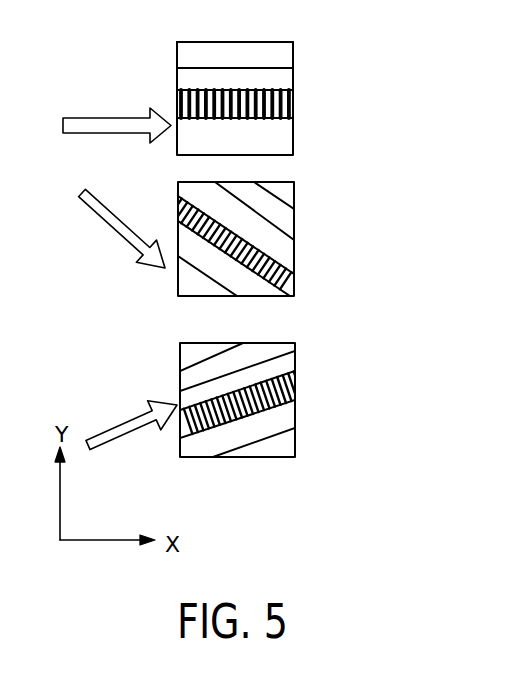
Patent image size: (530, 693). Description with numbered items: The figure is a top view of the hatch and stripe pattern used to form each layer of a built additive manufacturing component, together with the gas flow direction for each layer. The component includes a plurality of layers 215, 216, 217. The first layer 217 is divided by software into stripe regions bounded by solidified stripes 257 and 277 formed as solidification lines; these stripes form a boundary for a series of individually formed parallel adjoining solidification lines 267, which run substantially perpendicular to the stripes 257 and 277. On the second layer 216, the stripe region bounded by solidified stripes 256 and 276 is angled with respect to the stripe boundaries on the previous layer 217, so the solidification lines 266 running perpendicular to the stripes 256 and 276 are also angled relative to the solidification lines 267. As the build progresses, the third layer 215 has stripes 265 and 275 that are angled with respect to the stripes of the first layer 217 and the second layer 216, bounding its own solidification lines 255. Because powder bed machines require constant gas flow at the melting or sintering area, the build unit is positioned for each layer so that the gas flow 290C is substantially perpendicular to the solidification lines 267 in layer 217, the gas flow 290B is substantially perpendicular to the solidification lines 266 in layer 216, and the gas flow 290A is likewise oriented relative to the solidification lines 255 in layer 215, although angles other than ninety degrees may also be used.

The third layer 215 is at (325, 70).
The second layer 216 is at (330, 210).
The first layer 217 is at (330, 368).
The solidification lines 255 is at (180, 107).
The solidified stripe 256 is at (291, 284).
The solidified stripe 257 is at (208, 431).
The stripe 265 is at (190, 68).
The solidification lines 266 is at (185, 219).
The solidification lines 267 is at (180, 434).
The stripe 275 is at (293, 42).
The solidified stripe 276 is at (257, 219).
The solidified stripe 277 is at (188, 394).
The gas flow 290A is at (63, 118).
The gas flow 290B is at (82, 188).
The gas flow 290C is at (100, 428).